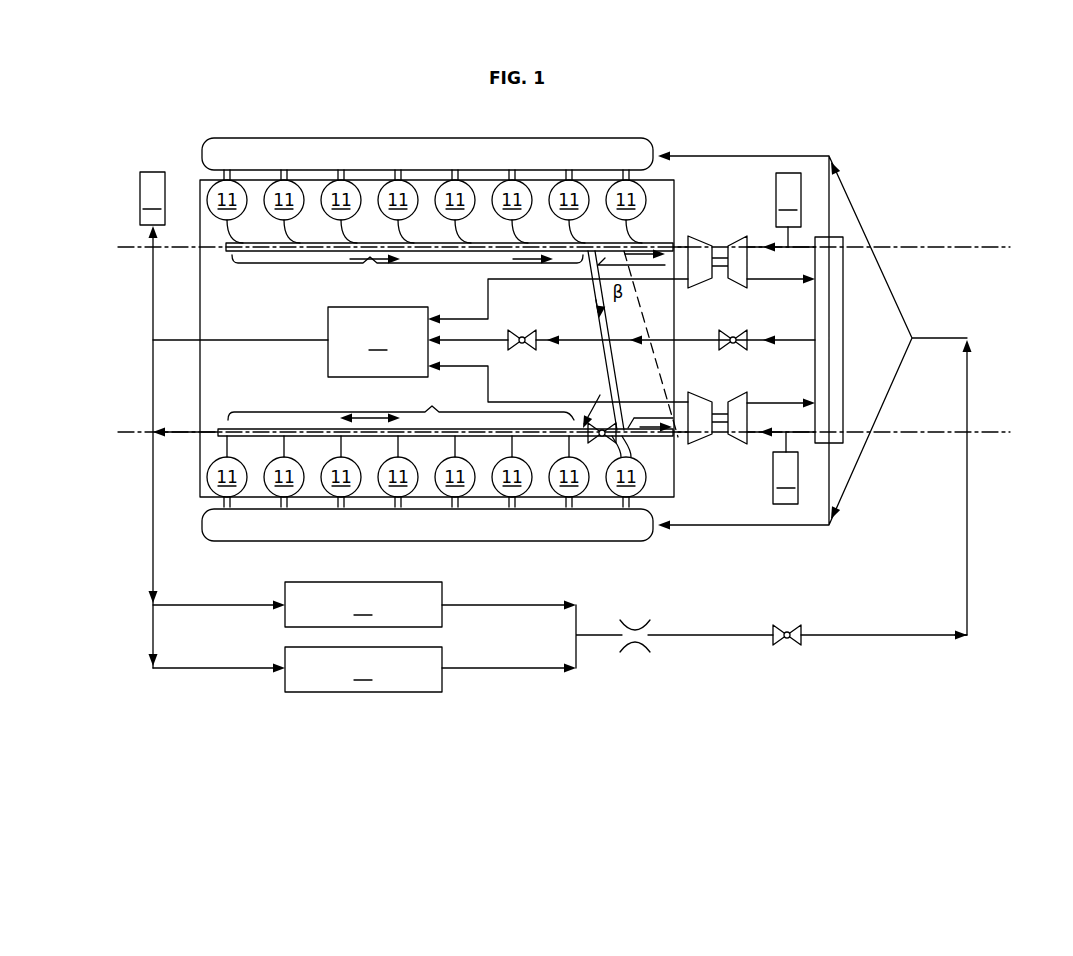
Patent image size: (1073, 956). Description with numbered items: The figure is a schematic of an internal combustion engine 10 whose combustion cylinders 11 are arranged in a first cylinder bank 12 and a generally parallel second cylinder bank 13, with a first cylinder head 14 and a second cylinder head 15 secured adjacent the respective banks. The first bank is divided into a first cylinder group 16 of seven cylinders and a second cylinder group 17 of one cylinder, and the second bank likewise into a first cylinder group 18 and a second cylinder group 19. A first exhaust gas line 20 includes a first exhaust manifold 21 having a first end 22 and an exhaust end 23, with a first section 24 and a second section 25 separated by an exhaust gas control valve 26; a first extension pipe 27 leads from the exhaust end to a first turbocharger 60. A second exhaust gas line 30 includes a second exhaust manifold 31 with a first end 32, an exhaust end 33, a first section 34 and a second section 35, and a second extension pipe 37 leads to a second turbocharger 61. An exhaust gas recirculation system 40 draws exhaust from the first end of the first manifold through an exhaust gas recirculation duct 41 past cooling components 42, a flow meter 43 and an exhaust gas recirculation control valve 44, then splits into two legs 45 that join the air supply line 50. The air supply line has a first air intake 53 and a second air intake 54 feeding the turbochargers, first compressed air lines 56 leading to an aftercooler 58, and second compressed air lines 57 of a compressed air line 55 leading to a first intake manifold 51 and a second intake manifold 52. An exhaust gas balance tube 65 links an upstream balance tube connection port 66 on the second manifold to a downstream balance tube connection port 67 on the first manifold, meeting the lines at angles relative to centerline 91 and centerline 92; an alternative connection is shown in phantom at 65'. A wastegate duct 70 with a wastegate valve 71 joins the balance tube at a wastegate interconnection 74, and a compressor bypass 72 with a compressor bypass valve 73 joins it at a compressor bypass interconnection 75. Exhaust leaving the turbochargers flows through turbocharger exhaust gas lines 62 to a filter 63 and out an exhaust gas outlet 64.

The internal combustion engine 10 is at (854, 136).
The combustion cylinders 11 is at (426, 338).
The first cylinder bank 12 is at (122, 470).
The second cylinder bank 13 is at (150, 151).
The first cylinder head 14 is at (200, 482).
The second cylinder head 15 is at (200, 193).
The first cylinder group 16 is at (585, 546).
The second cylinder group 17 is at (595, 546).
The first cylinder group 18 is at (210, 131).
The second cylinder group 19 is at (595, 131).
The first exhaust gas line 20 is at (231, 437).
The first exhaust manifold 21 is at (248, 434).
The first end 22 is at (218, 430).
The exhaust end 23 is at (676, 462).
The first section 24 is at (401, 403).
The second section 25 is at (650, 414).
The exhaust gas control valve 26 is at (602, 438).
The first extension pipe 27 is at (689, 445).
The second exhaust gas line 30 is at (267, 243).
The second exhaust manifold 31 is at (274, 243).
The first end 32 is at (227, 250).
The exhaust end 33 is at (655, 243).
The first section 34 is at (407, 271).
The second section 35 is at (618, 256).
The second extension pipe 37 is at (688, 238).
The exhaust gas recirculation system 40 is at (126, 630).
The exhaust gas recirculation duct 41 is at (153, 518).
The cooling components 42 is at (560, 637).
The flow meter 43 is at (632, 648).
The exhaust gas recirculation control valve 44 is at (787, 645).
The legs 45 is at (884, 272).
The air supply line 50 is at (812, 542).
The first intake manifold 51 is at (655, 532).
The second intake manifold 52 is at (655, 145).
The first air intake 53 is at (785, 468).
The second air intake 54 is at (788, 210).
The compressed air line 55 is at (829, 188).
The first compressed air lines 56 is at (772, 279).
The second compressed air lines 57 is at (829, 213).
The aftercooler 58 is at (843, 353).
The first turbocharger 60 is at (702, 393).
The second turbocharger 61 is at (742, 238).
The turbocharger exhaust gas lines 62 is at (518, 280).
The filter 63 is at (290, 342).
The exhaust gas outlet 64 is at (152, 198).
The exhaust gas balance tube 65 is at (571, 294).
The alternate balance tube connection 65' is at (671, 344).
The upstream balance tube connection port 66 is at (602, 243).
The downstream balance tube connection port 67 is at (608, 462).
The wastegate duct 70 is at (562, 338).
The wastegate valve 71 is at (521, 328).
The compressor bypass 72 is at (780, 339).
The compressor bypass valve 73 is at (728, 330).
The wastegate interconnection 74 is at (603, 341).
The compressor bypass interconnection 75 is at (613, 341).
The centerline 91 is at (987, 432).
The centerline 92 is at (997, 247).